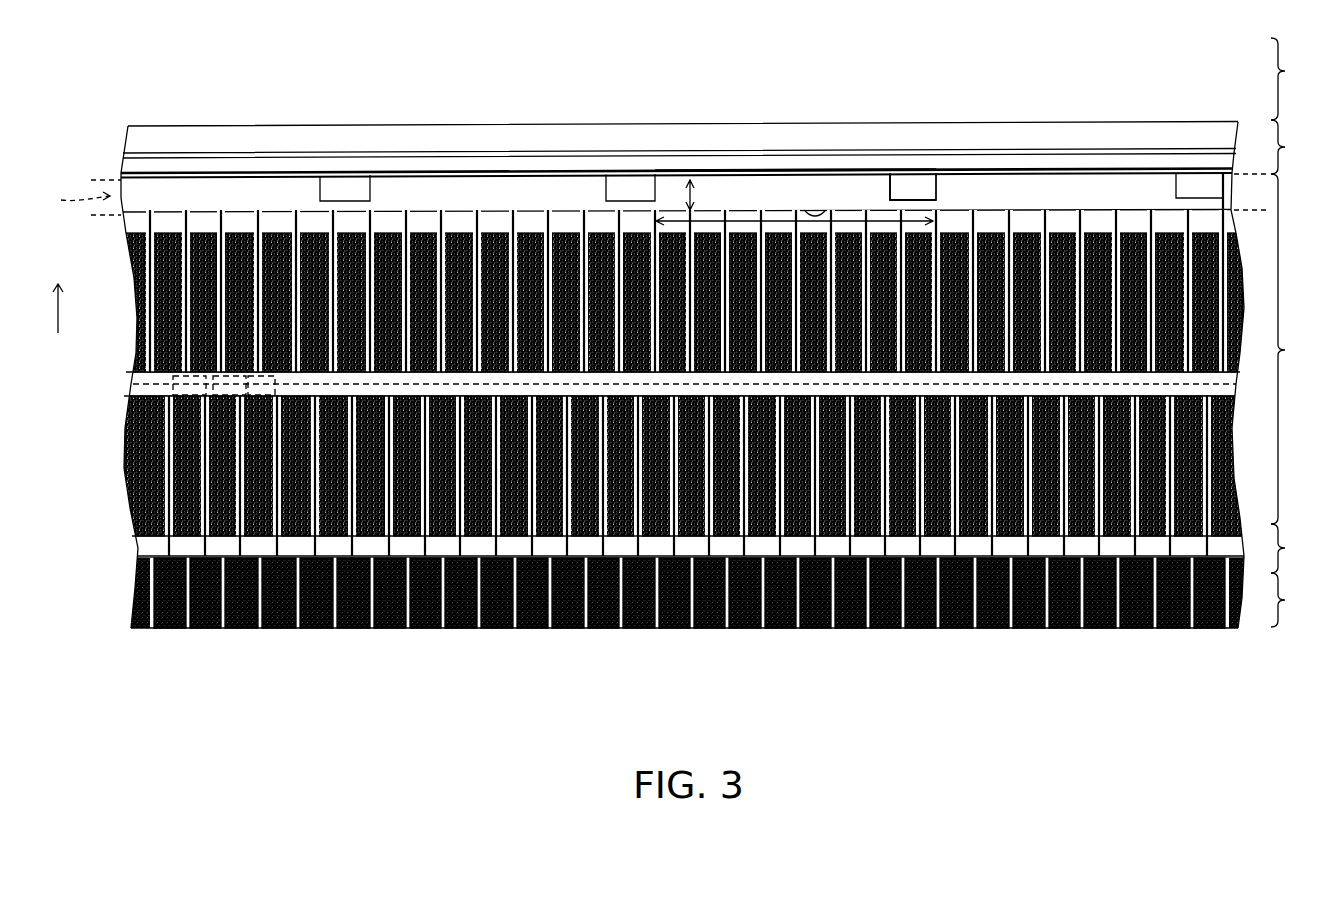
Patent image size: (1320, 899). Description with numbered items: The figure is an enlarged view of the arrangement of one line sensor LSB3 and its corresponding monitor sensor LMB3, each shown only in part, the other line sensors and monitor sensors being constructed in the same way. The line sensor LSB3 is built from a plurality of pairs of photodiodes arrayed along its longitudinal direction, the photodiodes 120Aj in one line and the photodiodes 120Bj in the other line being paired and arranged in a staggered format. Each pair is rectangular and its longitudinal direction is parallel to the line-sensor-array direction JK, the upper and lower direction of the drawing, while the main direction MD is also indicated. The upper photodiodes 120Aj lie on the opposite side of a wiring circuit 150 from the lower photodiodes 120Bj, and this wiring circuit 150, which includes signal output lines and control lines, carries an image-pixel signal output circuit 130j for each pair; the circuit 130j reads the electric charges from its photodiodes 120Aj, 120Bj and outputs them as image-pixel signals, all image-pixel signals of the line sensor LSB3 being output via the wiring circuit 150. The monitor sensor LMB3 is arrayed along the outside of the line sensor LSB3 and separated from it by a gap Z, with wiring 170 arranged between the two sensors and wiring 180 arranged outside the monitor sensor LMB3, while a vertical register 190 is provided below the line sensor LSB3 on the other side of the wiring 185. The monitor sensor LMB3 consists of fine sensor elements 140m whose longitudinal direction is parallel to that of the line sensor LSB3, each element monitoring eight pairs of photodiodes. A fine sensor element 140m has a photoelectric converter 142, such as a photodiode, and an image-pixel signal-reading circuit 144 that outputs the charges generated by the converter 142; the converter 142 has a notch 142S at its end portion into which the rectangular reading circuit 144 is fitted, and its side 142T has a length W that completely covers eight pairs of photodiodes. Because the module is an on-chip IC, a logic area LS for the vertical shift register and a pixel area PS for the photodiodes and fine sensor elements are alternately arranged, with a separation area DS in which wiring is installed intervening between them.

The wiring 180 is at (1092, 125).
The monitor sensor LMB3 is at (108, 157).
The main direction MD is at (73, 197).
The wiring 170 is at (110, 221).
The line sensor LSB3 is at (116, 270).
The vertical register 190 is at (669, 622).
The wiring 185 is at (119, 544).
The wiring circuit 150 is at (114, 380).
The image-pixel signal output circuit 130j is at (281, 222).
The photodiodes 120Aj is at (234, 225).
The photodiodes 120Bj is at (253, 387).
The fine sensor element 140m is at (724, 180).
The gap Z is at (680, 184).
The length W is at (772, 212).
The photoelectric converter 142 is at (853, 167).
The side 142T is at (815, 200).
The notch 142S is at (887, 181).
The image-pixel signal-reading circuit 144 is at (913, 175).
The line-sensor-array direction JK is at (43, 308).
The logic area LS is at (1291, 332).
The separation area DS is at (1291, 346).
The pixel area PS is at (1291, 349).